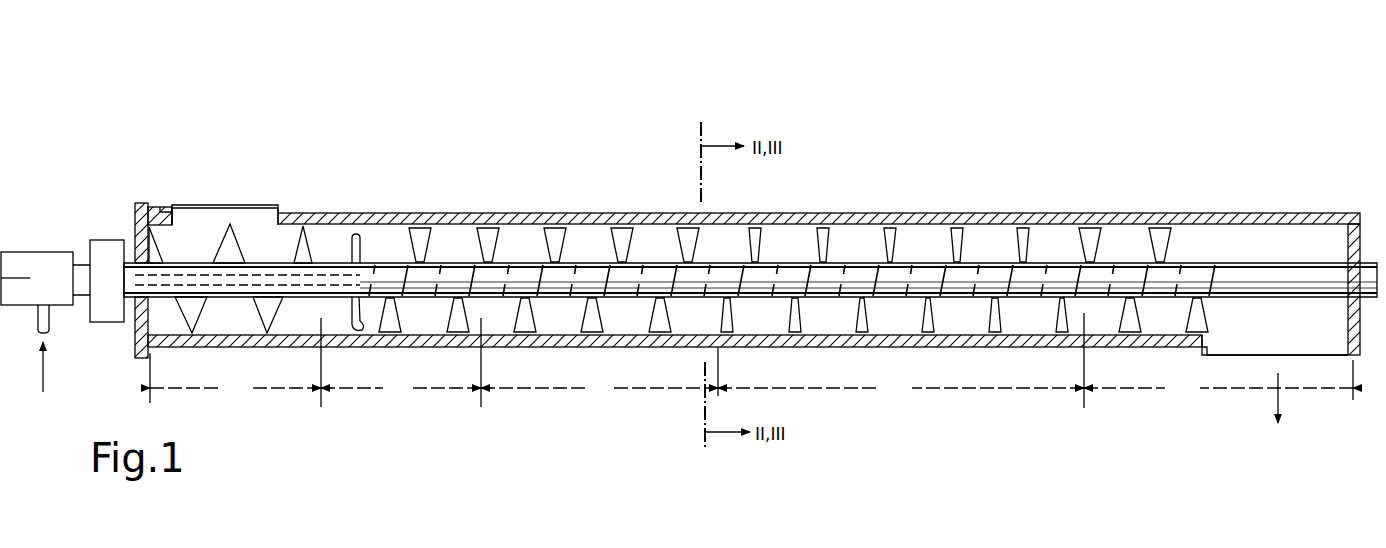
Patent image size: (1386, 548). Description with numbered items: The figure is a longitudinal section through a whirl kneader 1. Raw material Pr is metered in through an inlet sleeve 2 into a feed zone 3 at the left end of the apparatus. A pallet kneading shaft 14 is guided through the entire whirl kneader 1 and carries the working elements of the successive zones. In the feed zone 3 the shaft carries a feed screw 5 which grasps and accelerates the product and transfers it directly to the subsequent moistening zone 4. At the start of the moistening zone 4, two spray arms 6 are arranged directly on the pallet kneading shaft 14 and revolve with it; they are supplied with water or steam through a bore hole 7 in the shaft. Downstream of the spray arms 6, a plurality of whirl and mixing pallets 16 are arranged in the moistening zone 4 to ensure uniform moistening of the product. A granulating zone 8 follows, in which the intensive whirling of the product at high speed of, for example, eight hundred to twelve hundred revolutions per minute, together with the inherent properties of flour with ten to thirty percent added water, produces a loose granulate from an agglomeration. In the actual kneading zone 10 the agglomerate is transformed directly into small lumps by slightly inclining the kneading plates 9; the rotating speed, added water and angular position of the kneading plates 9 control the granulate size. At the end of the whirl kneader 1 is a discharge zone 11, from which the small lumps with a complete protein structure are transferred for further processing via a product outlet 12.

The whirl kneader 1 is at (488, 122).
The inlet sleeve 2 is at (258, 232).
The feed zone 3 is at (235, 362).
The moistening zone 4 is at (401, 362).
The feed screw 5 is at (213, 243).
The spray arms 6 is at (350, 244).
The bore hole 7 is at (268, 262).
The granulating zone 8 is at (599, 373).
The kneading plates 9 is at (900, 243).
The kneading zone 10 is at (901, 360).
The discharge zone 11 is at (1218, 380).
The product outlet 12 is at (1323, 338).
The pallet kneading shaft 14 is at (840, 272).
The whirl and mixing pallets 16 is at (505, 240).
The raw material Pr is at (220, 193).